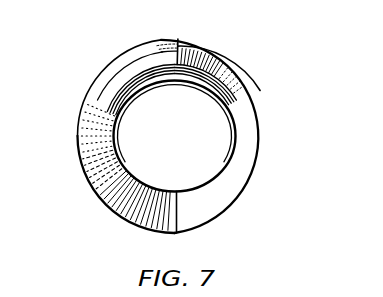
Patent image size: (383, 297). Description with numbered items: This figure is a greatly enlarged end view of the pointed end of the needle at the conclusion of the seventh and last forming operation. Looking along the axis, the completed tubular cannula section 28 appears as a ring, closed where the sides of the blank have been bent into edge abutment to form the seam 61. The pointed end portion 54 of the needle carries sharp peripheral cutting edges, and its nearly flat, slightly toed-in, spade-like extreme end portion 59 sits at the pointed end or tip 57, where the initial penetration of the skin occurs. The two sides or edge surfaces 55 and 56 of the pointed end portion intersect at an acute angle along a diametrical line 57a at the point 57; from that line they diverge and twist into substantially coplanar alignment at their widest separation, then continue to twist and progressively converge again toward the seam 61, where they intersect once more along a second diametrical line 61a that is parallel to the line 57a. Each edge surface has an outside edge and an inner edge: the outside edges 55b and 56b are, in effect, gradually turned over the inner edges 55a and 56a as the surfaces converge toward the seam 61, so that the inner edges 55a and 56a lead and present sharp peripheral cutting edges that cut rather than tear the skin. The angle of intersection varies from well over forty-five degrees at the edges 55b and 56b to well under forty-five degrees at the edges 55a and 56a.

The tubular cannula section 28 is at (276, 98).
The pointed end portion 54 is at (110, 64).
The edge surface 55 is at (254, 140).
The inner edge 55a is at (226, 170).
The outside edge 55b is at (257, 194).
The edge surface 56 is at (97, 128).
The inner edge 56a is at (137, 173).
The outside edge 56b is at (96, 191).
The pointed end or tip 57 is at (178, 46).
The diametrical line 57a is at (167, 50).
The extreme end portion 59 is at (197, 44).
The seam 61 is at (176, 228).
The diametrical line 61a is at (160, 229).